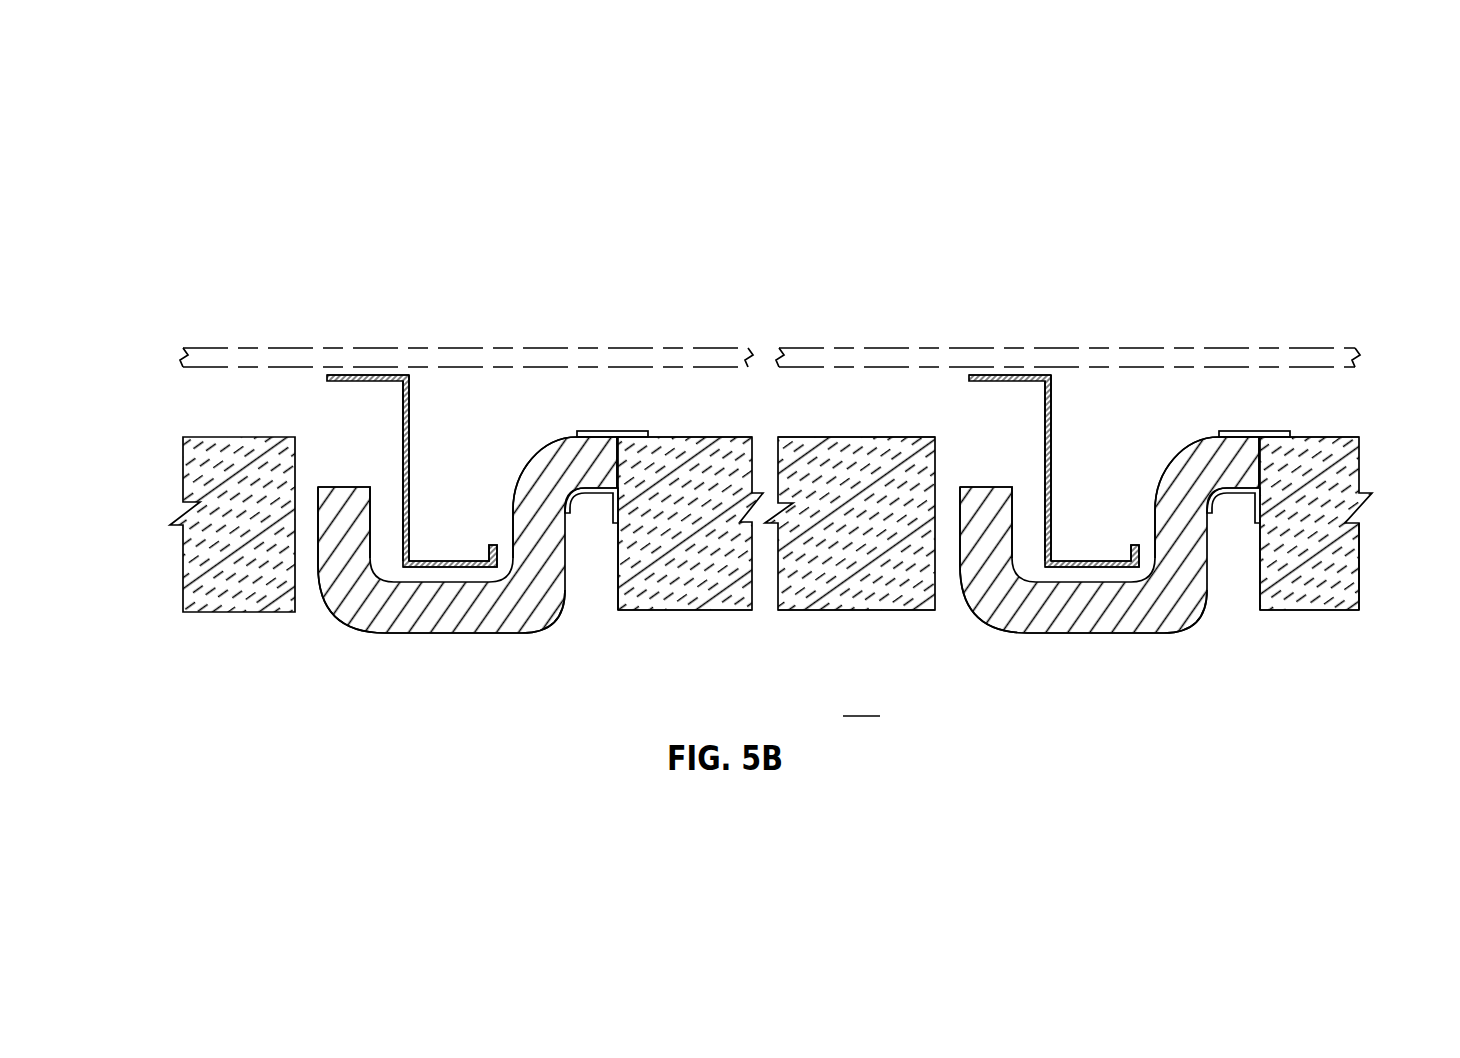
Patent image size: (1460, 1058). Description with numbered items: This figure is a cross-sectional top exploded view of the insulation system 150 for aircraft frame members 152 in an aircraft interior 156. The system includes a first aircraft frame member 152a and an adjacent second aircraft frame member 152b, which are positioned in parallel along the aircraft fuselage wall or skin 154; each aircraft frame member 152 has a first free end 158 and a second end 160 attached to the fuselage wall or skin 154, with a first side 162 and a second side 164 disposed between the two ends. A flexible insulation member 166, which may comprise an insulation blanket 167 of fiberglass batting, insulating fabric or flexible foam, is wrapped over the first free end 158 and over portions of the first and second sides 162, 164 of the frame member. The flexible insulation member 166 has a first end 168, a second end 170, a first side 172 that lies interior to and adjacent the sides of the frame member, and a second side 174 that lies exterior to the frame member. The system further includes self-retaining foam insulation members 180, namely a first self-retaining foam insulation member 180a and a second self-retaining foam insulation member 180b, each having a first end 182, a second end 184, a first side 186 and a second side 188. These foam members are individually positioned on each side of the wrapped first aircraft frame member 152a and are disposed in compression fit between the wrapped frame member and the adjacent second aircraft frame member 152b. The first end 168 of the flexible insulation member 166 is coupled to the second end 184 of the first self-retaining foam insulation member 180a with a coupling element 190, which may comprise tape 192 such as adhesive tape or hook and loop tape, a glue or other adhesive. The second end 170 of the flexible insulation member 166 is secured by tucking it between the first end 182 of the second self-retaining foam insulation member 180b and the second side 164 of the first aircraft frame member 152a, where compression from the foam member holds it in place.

The insulation system 150 is at (1266, 263).
The aircraft frame member 152 is at (360, 356).
The first aircraft frame member 152a is at (1053, 398).
The second aircraft frame member 152b is at (410, 392).
The aircraft fuselage wall or skin 154 is at (650, 346).
The aircraft interior 156 is at (863, 703).
The first free end 158 is at (452, 560).
The second end 160 is at (347, 383).
The first side 162 is at (411, 430).
The second side 164 is at (400, 452).
The flexible insulation member 166 is at (438, 642).
The insulation blanket 167 is at (518, 622).
The first end 168 is at (580, 462).
The second end 170 is at (337, 495).
The first side 172 is at (518, 486).
The second side 174 is at (348, 618).
The self-retaining foam insulation member 180 is at (158, 480).
The first self-retaining foam insulation member 180a is at (1307, 600).
The second self-retaining foam insulation member 180b is at (647, 607).
The first end 182 is at (935, 440).
The second end 184 is at (613, 590).
The first side 186 is at (693, 435).
The second side 188 is at (713, 617).
The coupling element 190 is at (597, 428).
The tape 192 is at (627, 440).